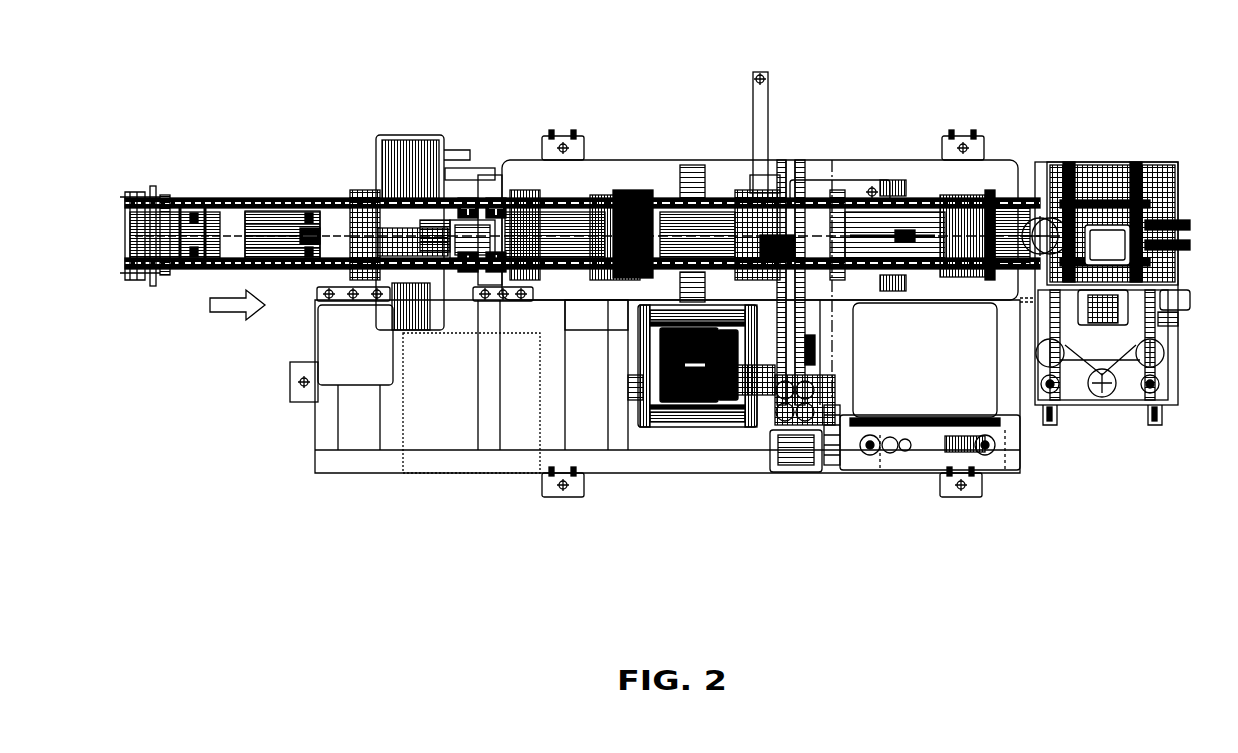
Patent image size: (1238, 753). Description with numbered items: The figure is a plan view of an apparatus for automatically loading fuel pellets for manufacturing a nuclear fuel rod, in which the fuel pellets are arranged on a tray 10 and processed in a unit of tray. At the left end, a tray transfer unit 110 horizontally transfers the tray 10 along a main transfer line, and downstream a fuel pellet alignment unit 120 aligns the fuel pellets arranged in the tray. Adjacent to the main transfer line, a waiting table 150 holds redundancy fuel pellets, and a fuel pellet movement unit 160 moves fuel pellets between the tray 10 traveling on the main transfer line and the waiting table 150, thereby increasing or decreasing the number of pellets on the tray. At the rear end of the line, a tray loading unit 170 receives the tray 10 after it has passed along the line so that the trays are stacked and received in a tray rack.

The tray 10 is at (283, 197).
The tray transfer unit 110 is at (228, 188).
The fuel pellet alignment unit 120 is at (647, 196).
The waiting table 150 is at (660, 356).
The fuel pellet movement unit 160 is at (815, 318).
The tray loading unit 170 is at (1108, 150).